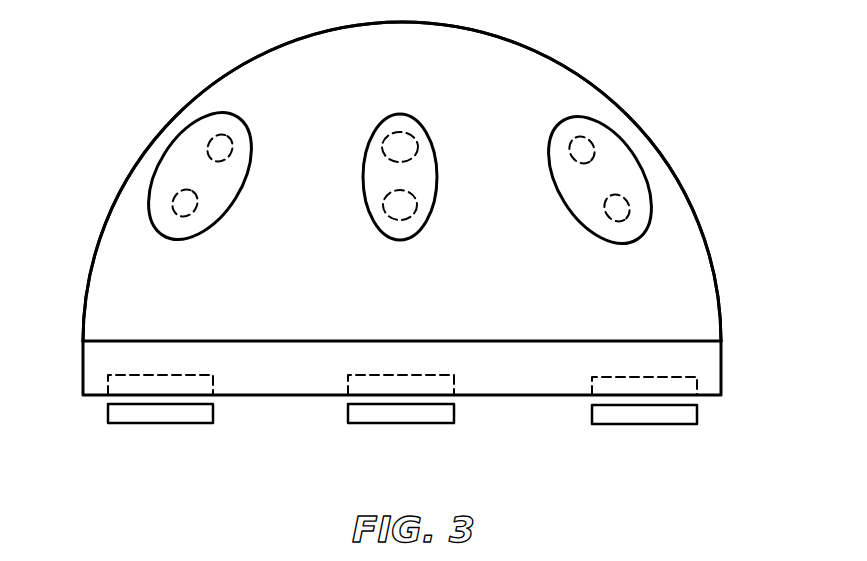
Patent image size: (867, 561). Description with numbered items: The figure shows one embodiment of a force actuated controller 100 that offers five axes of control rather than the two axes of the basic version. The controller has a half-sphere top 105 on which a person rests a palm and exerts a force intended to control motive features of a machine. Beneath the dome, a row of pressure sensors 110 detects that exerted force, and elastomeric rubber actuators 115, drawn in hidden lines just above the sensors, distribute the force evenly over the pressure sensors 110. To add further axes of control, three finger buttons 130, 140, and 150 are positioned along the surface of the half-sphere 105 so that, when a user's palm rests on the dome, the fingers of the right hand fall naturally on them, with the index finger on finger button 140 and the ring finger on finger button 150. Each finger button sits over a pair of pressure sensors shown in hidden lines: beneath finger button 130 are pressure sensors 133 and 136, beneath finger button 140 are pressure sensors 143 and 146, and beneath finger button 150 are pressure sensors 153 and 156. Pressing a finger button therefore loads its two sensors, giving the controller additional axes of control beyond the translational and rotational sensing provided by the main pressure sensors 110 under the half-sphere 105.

The force actuated controller 100 is at (575, 58).
The half-sphere top 105 is at (704, 243).
The pressure sensors 110 is at (173, 423).
The elastomeric rubber actuators 115 is at (198, 373).
The finger button 130 is at (570, 112).
The pressure sensor 133 is at (588, 142).
The pressure sensor 136 is at (628, 202).
The finger button 140 is at (408, 102).
The pressure sensor 143 is at (417, 152).
The pressure sensor 146 is at (412, 213).
The finger button 150 is at (258, 118).
The pressure sensor 153 is at (213, 135).
The pressure sensor 156 is at (178, 202).